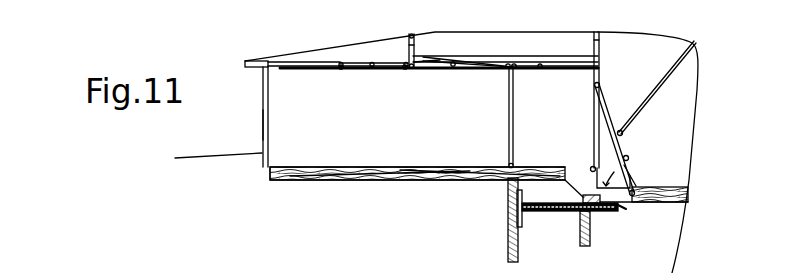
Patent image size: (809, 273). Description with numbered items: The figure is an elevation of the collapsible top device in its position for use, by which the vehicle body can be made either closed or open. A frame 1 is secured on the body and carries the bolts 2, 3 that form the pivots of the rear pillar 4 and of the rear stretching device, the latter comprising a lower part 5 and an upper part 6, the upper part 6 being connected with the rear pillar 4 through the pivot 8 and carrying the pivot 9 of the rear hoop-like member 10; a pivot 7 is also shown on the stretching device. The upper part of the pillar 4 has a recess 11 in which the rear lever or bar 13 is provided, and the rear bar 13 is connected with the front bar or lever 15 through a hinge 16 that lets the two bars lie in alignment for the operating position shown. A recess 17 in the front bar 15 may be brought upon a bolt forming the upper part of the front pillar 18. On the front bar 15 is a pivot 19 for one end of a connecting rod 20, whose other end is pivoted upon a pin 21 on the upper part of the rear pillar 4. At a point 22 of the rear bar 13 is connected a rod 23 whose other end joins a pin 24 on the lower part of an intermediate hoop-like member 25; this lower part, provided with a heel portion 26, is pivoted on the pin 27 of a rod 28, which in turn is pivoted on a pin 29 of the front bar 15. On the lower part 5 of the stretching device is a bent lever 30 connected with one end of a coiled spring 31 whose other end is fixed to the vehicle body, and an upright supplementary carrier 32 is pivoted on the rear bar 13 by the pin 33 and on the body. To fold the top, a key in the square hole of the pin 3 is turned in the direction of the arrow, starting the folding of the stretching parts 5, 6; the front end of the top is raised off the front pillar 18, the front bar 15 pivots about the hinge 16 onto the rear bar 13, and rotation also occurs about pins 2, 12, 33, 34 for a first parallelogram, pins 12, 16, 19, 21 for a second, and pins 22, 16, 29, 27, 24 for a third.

The frame 1 is at (566, 180).
The bolt 2 is at (590, 167).
The bolt 3 is at (641, 195).
The rear pillar 4 is at (592, 114).
The lower part of rear stretching device 5 is at (631, 170).
The upper part of rear stretching device 6 is at (604, 112).
The strut pivot 7 is at (629, 159).
The pivot 8 is at (600, 86).
The pivot 9 is at (622, 134).
The rear hoop-like member 10 is at (696, 44).
The recess 11 is at (600, 62).
The pin 12 is at (582, 69).
The rear lever or bar 13 is at (566, 67).
The front bar or lever 15 is at (312, 69).
The hinge 16 is at (453, 69).
The recess 17 is at (258, 67).
The front pillar 18 is at (263, 124).
The pivot 19 is at (446, 57).
The connecting rod 20 is at (513, 64).
The pin 21 is at (591, 55).
The point 22 is at (538, 69).
The rod 23 is at (431, 58).
The pin 24 is at (408, 52).
The intermediate hoop-like member 25 is at (413, 40).
The heel portion 26 is at (437, 70).
The pin 27 is at (405, 70).
The rod 28 is at (360, 69).
The pin 29 is at (340, 62).
The bent lever 30 is at (616, 208).
The coiled spring 31 is at (590, 224).
The upright supplementary carrier 32 is at (510, 132).
The pin 33 is at (506, 70).
The pin 34 is at (508, 163).